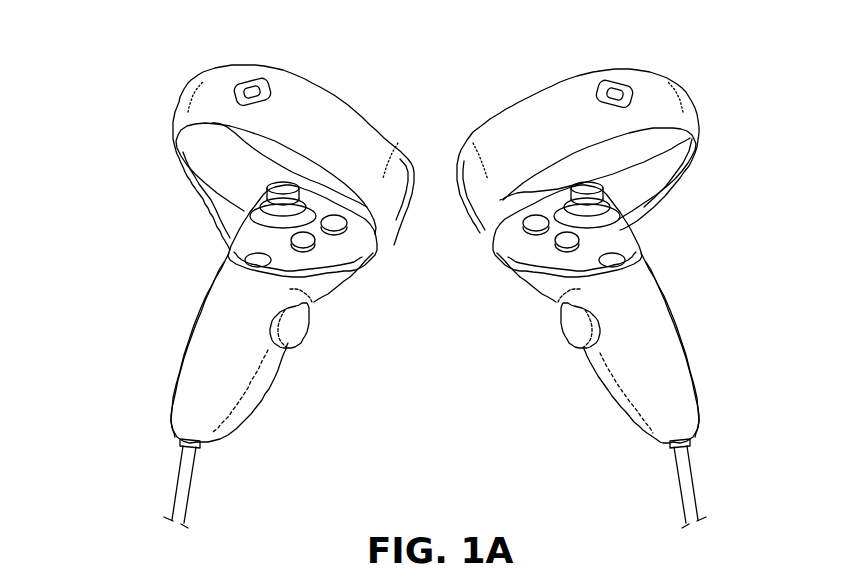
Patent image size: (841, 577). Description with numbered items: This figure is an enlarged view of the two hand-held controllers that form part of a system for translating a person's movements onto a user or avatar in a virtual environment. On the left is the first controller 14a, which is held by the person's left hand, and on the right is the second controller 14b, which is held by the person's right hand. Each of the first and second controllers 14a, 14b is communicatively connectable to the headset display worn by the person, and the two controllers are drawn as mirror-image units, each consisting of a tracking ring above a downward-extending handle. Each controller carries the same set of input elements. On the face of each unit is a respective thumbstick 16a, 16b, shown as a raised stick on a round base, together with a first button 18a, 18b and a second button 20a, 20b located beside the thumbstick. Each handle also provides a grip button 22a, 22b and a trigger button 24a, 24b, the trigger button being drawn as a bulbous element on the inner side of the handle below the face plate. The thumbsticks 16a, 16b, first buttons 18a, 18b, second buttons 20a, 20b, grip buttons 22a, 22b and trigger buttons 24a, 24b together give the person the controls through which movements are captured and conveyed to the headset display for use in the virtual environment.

The first controller 14a is at (153, 88).
The second controller 14b is at (719, 82).
The thumbstick 16a is at (49, 221).
The thumbstick 16b is at (770, 225).
The first button 18a is at (305, 239).
The first button 18b is at (565, 241).
The second button 20a is at (336, 223).
The second button 20b is at (537, 223).
The grip button 22a is at (49, 315).
The grip button 22b is at (770, 318).
The trigger button 24a is at (49, 411).
The trigger button 24b is at (770, 411).